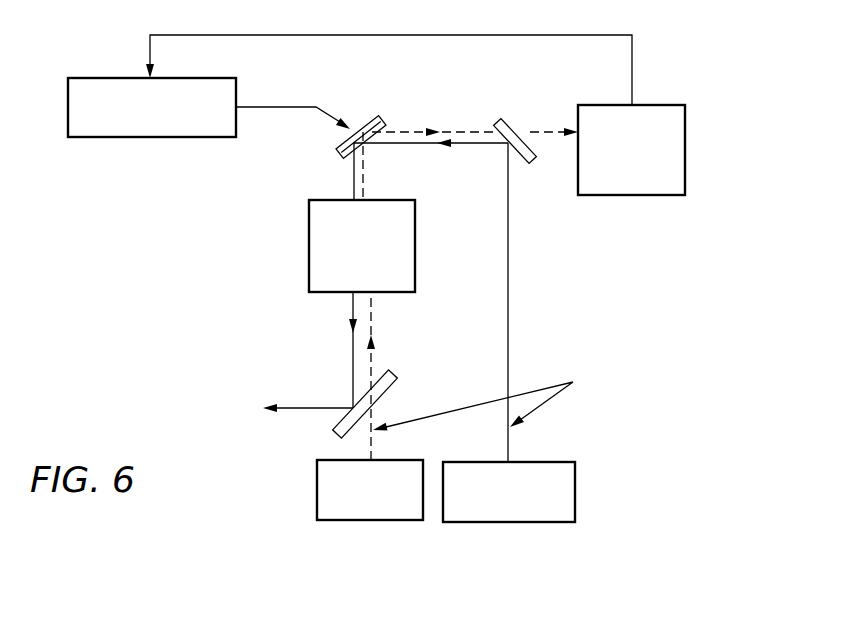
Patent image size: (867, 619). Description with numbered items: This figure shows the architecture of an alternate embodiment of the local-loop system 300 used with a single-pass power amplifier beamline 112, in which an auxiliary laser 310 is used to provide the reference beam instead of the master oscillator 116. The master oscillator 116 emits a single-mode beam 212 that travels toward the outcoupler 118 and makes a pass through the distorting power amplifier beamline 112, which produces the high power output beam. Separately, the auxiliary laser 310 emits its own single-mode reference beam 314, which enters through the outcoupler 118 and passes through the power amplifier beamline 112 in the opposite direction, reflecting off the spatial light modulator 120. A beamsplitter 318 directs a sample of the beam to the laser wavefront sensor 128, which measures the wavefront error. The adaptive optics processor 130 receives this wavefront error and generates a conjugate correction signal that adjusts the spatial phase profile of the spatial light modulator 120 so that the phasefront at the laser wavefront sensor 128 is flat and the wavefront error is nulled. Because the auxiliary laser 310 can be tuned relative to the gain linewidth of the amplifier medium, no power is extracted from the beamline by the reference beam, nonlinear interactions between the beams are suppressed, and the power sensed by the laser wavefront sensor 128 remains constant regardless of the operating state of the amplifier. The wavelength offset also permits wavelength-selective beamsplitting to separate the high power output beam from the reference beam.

The laser system 300 is at (145, 290).
The adaptive optics processor 130 is at (95, 77).
The spatial light modulator 120 is at (383, 121).
The beamsplitter 318 is at (530, 163).
The laser wavefront sensor 128 is at (685, 150).
The master oscillator single-mode beam 212 is at (508, 258).
The power amplifier beamline 112 is at (309, 243).
The auxiliary laser single-mode beam 314 is at (372, 420).
The outcoupler 118 is at (392, 373).
The auxiliary laser 310 is at (317, 488).
The master oscillator 116 is at (575, 490).